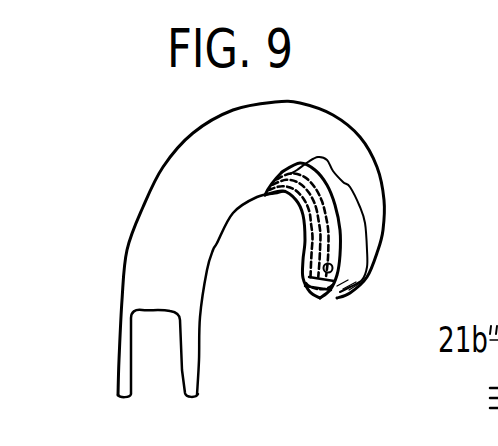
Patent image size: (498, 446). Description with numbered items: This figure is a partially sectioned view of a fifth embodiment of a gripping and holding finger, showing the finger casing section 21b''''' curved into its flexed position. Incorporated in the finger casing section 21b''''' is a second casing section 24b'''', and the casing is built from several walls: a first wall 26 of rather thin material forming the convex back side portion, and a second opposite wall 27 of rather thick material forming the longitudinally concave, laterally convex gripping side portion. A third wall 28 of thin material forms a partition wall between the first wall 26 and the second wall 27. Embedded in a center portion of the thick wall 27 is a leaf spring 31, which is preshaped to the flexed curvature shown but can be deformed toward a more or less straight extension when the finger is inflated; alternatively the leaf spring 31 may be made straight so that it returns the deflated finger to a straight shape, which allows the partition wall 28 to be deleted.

The finger casing section 21b''''' is at (232, 249).
The second casing section 24b'''' is at (356, 253).
The first wall 26 is at (332, 297).
The second opposite wall 27 is at (280, 202).
The third wall 28 is at (333, 225).
The leaf spring 31 is at (307, 242).